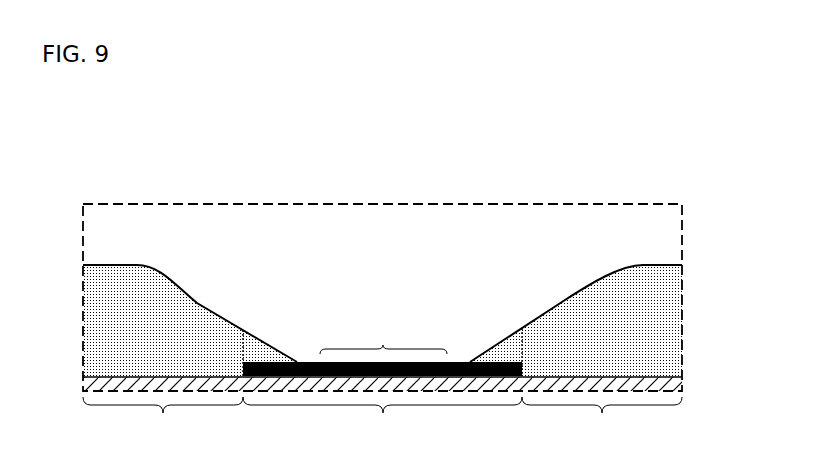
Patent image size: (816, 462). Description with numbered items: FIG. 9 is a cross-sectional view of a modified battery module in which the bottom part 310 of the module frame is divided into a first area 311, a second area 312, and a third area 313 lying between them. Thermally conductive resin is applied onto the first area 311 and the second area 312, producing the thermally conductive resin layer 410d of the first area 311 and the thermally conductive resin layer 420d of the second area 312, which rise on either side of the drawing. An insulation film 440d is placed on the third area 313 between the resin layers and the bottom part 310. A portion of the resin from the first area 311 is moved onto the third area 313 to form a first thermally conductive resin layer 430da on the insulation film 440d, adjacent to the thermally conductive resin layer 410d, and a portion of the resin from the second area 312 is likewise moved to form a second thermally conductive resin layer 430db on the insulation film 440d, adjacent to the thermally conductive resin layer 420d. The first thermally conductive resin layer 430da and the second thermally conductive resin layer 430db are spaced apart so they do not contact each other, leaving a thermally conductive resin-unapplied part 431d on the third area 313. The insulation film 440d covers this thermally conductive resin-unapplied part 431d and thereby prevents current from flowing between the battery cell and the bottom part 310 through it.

The bottom part 310 is at (682, 380).
The first area 311 is at (163, 422).
The second area 312 is at (602, 422).
The third area 313 is at (382, 422).
The thermally conductive resin layer 410d is at (118, 287).
The thermally conductive resin layer 420d is at (657, 288).
The first thermally conductive resin layer 430da is at (268, 353).
The second thermally conductive resin layer 430db is at (513, 353).
The thermally conductive resin-unapplied part 431d is at (383, 345).
The insulation film 440d is at (485, 360).